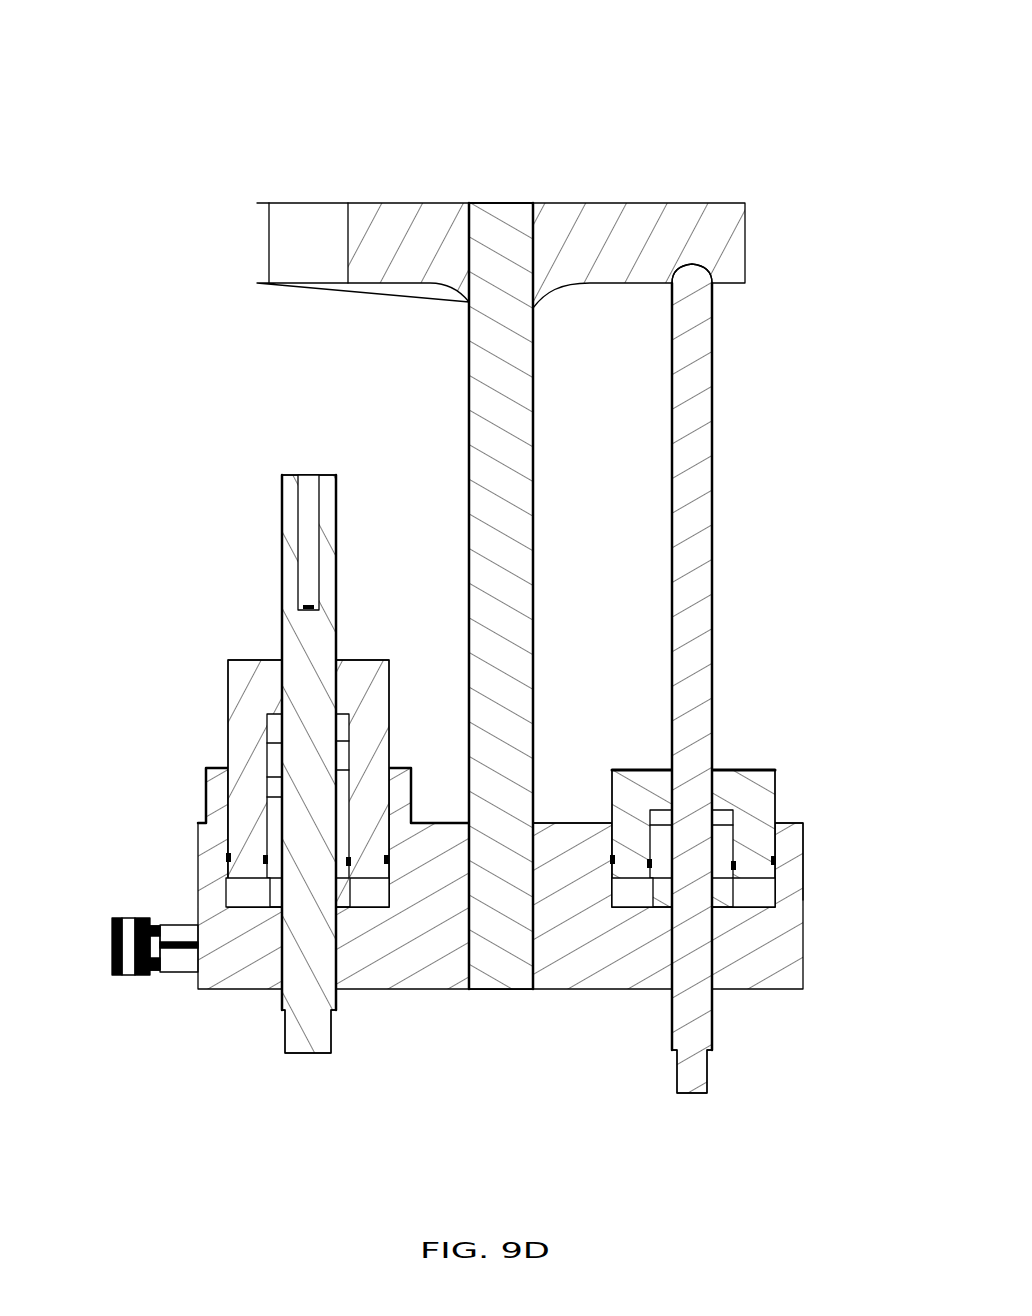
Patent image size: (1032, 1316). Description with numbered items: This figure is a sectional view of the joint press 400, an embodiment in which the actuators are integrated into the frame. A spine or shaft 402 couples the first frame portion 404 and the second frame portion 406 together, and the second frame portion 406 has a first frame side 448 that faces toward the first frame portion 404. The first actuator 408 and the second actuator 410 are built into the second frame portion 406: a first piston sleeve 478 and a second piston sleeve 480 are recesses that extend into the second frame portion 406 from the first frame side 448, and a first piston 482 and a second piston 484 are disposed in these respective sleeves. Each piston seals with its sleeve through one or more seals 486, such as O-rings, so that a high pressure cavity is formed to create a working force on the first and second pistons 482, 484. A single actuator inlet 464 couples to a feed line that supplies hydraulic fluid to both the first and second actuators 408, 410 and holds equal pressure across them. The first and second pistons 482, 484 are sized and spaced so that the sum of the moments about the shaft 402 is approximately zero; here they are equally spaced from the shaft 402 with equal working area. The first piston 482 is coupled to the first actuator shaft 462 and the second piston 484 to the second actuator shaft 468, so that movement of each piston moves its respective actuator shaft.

The joint press 400 is at (403, 100).
The shaft 402 is at (469, 403).
The first frame portion 404 is at (603, 203).
The second frame portion 406 is at (577, 992).
The first actuator 408 is at (190, 766).
The second actuator 410 is at (810, 815).
The first frame side 448 is at (585, 823).
The first actuator shaft 462 is at (284, 490).
The actuator inlet 464 is at (112, 940).
The second actuator shaft 468 is at (712, 443).
The first piston sleeve 478 is at (235, 893).
The second piston sleeve 480 is at (765, 890).
The first piston 482 is at (240, 712).
The second piston 484 is at (768, 800).
The seal 486 is at (228, 857).